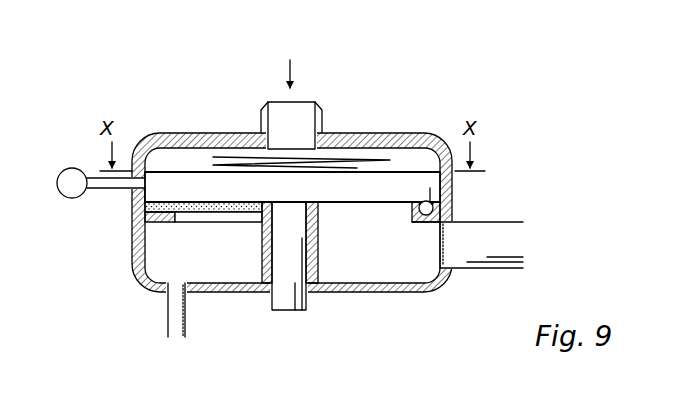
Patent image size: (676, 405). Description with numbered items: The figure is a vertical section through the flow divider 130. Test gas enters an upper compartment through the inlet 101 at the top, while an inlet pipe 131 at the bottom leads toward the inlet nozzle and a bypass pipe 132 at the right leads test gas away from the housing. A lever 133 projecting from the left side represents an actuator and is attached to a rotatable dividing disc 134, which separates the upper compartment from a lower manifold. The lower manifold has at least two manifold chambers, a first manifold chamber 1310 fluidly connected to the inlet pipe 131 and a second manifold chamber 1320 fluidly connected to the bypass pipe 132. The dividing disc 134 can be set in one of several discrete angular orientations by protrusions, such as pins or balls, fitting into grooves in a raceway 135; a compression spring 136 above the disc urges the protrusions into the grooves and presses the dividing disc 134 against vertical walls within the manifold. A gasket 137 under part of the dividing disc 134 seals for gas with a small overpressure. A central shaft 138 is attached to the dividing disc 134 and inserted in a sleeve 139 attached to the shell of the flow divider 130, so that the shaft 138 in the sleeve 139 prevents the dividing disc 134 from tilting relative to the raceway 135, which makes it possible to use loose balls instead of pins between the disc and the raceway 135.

The flow divider 130 is at (195, 42).
The inlet 101 is at (300, 108).
The compression spring 136 is at (245, 158).
The dividing disc 134 is at (385, 190).
The gasket 137 is at (196, 220).
The sleeve 139 is at (245, 282).
The central shaft 138 is at (283, 297).
The raceway 135 is at (430, 226).
The bypass pipe 132 is at (472, 230).
The lever 133 is at (115, 187).
The inlet pipe 131 is at (175, 305).
The first manifold chamber 1310 is at (160, 258).
The second manifold chamber 1320 is at (348, 272).